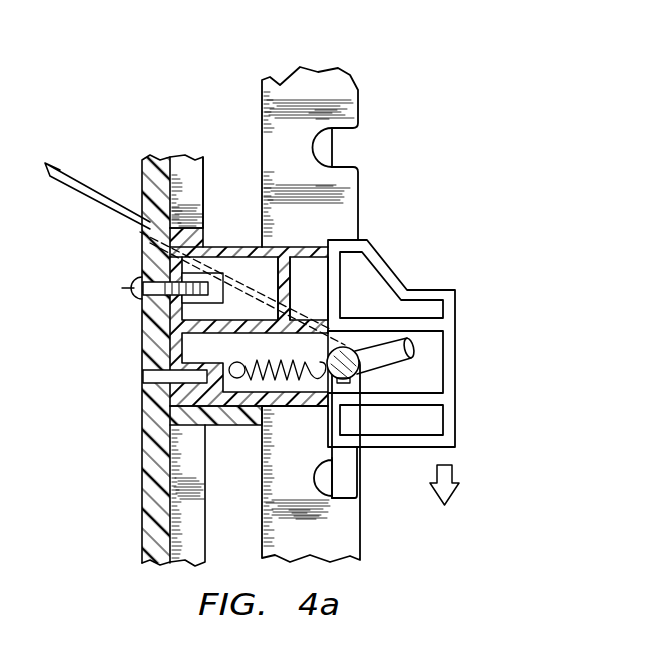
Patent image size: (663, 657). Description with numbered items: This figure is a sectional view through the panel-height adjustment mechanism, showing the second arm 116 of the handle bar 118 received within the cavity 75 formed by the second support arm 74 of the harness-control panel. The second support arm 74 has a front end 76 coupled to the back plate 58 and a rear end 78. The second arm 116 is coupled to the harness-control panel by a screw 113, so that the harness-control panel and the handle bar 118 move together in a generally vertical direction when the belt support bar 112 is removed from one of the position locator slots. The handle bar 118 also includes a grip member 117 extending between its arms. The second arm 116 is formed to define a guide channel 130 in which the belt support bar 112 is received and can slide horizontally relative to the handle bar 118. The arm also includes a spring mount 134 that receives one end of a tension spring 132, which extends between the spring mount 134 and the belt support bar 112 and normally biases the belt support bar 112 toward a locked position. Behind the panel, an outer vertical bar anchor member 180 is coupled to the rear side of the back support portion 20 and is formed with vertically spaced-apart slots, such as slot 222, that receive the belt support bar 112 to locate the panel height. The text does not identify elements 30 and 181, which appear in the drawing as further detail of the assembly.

The back support portion 20 is at (185, 157).
The lever hidden position 30 is at (228, 267).
The back plate 58 is at (142, 408).
The second support arm 74 is at (198, 236).
The cavity 75 is at (143, 380).
The front end 76 is at (90, 186).
The rear end 78 is at (243, 375).
The belt support bar 112 is at (347, 346).
The screw 113 is at (127, 294).
The second arm 116 is at (287, 275).
The grip member 117 is at (450, 375).
The handle bar 118 is at (457, 306).
The guide channel 130 is at (417, 357).
The tension spring 132 is at (240, 388).
The spring mount 134 is at (243, 375).
The outer vertical bar anchor member 180 is at (362, 69).
The center post 181 is at (283, 247).
The slot 222 is at (333, 476).